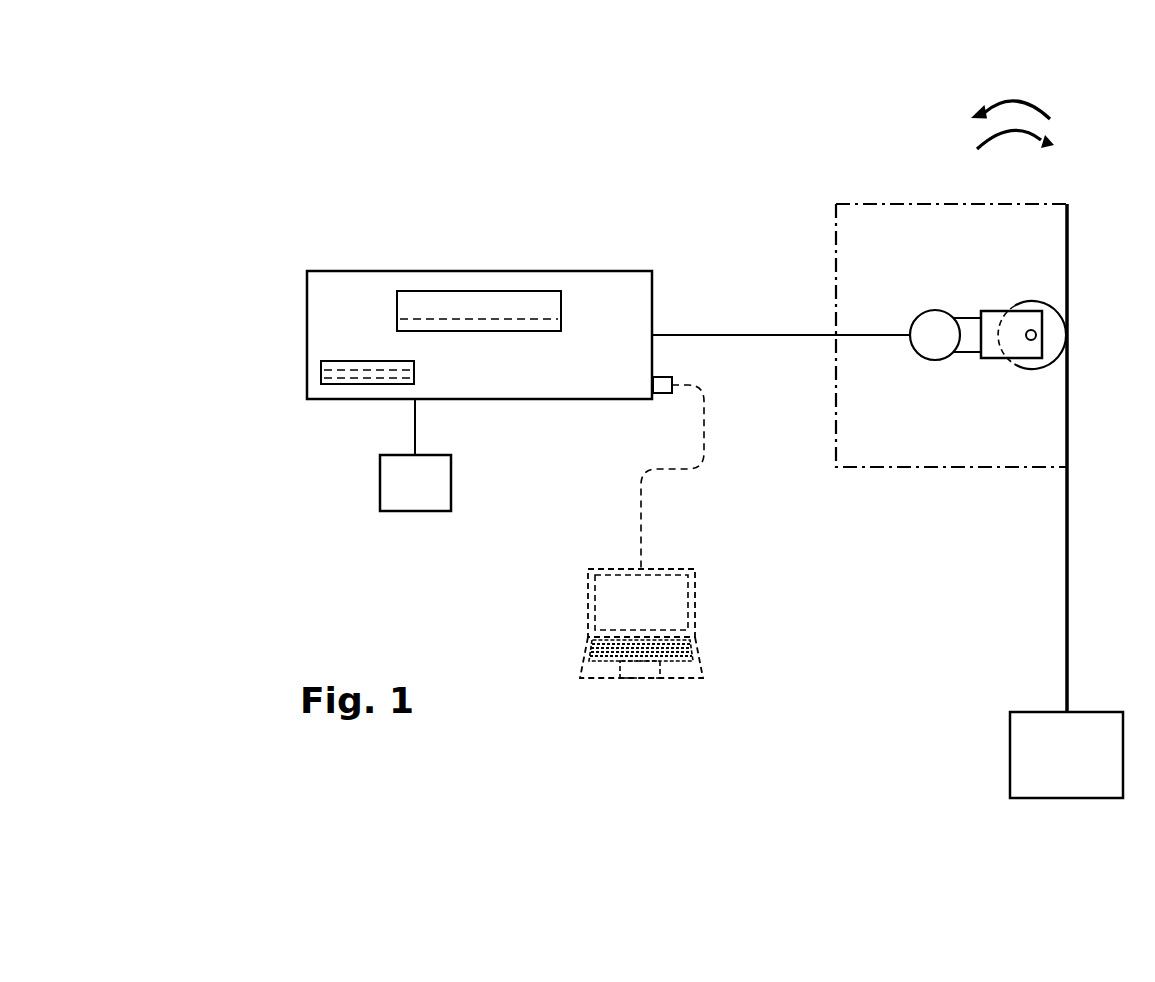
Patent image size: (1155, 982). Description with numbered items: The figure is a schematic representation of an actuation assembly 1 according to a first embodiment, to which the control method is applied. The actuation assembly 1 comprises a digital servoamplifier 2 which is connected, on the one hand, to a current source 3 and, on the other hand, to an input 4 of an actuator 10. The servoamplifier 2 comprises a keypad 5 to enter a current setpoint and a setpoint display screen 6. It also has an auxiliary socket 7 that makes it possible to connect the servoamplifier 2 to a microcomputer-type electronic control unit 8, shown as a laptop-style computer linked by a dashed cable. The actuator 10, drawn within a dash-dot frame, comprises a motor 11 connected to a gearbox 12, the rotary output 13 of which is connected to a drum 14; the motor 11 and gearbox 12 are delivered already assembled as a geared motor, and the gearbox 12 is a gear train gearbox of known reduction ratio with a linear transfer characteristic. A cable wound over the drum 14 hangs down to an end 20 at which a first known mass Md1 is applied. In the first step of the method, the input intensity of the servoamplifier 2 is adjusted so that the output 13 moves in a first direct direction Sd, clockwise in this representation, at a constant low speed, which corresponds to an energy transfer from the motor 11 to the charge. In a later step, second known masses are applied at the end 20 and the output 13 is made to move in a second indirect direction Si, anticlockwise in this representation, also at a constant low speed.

The actuation assembly 1 is at (675, 165).
The digital servoamplifier 2 is at (449, 271).
The current source 3 is at (415, 455).
The input of the actuator 4 is at (835, 336).
The keypad 5 is at (322, 372).
The setpoint display screen 6 is at (518, 291).
The interface 7 is at (660, 393).
The electronic control unit 8 is at (680, 607).
The actuator 10 is at (912, 481).
The motor 11 is at (935, 320).
The gearbox 12 is at (993, 358).
The rotary output 13 is at (1031, 330).
The drum 14 is at (1053, 303).
The end of the cable 20 is at (1070, 710).
The first known mass Md1 is at (1010, 753).
The first direct direction Sd is at (977, 148).
The second indirect direction Si is at (1047, 110).